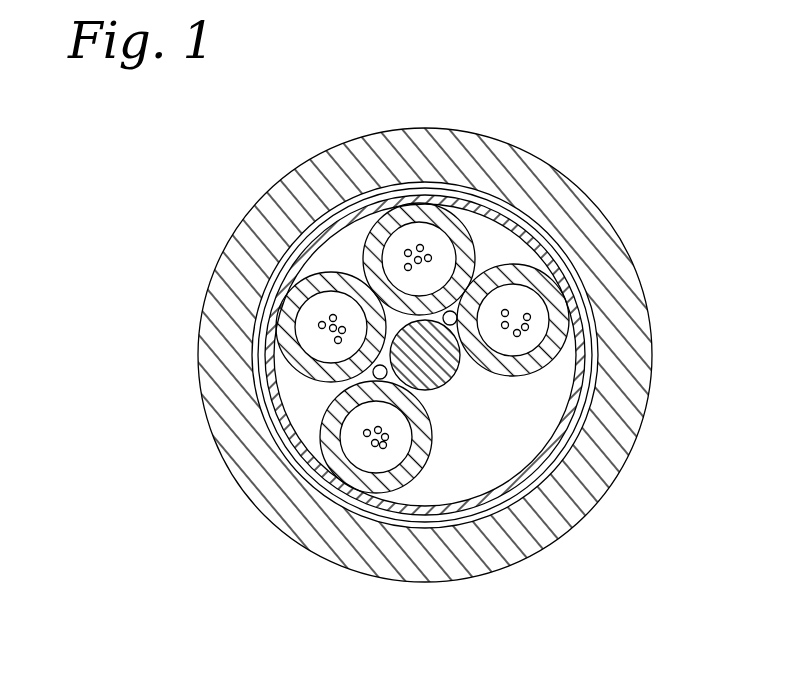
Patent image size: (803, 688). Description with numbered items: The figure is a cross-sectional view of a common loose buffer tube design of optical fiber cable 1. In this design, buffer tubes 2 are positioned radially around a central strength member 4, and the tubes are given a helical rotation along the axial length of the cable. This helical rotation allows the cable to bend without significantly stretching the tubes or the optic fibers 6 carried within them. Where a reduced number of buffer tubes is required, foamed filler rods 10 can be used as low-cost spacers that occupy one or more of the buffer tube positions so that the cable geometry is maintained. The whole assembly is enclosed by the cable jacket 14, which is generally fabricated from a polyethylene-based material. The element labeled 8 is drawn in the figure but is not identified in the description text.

The optical fiber cable 1 is at (568, 123).
The buffer tubes 2 is at (545, 268).
The central strength member 4 is at (452, 378).
The optic fibers 6 is at (540, 300).
The optical fibers 8 is at (535, 331).
The foamed filler rods 10 is at (434, 487).
The cable jacket 14 is at (524, 532).